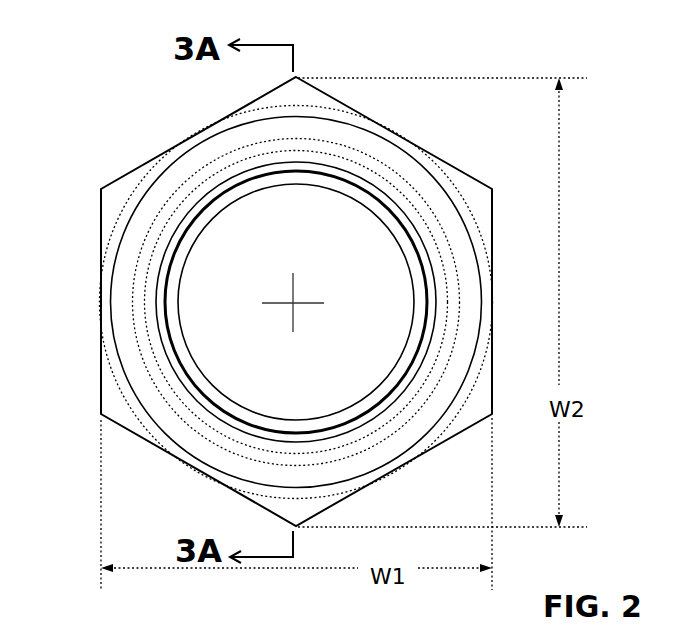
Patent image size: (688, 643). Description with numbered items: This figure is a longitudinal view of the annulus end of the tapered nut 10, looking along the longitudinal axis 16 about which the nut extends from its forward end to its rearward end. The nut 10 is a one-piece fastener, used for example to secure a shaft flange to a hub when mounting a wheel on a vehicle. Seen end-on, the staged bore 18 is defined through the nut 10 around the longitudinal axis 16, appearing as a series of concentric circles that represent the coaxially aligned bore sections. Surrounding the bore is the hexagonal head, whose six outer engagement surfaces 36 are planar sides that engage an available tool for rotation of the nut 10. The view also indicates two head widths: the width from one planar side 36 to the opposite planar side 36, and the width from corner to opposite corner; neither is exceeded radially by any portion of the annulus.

The nut 10 is at (167, 117).
The longitudinal axis 16 is at (292, 302).
The staged bore 18 is at (347, 233).
The outer engagement surfaces 36 is at (148, 163).